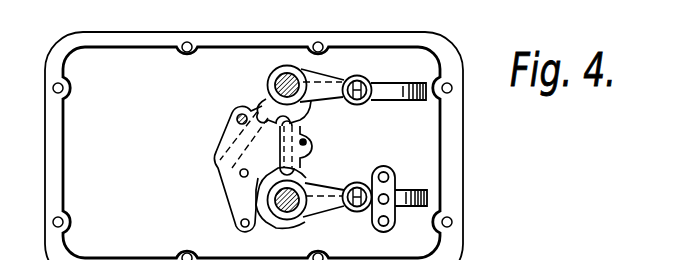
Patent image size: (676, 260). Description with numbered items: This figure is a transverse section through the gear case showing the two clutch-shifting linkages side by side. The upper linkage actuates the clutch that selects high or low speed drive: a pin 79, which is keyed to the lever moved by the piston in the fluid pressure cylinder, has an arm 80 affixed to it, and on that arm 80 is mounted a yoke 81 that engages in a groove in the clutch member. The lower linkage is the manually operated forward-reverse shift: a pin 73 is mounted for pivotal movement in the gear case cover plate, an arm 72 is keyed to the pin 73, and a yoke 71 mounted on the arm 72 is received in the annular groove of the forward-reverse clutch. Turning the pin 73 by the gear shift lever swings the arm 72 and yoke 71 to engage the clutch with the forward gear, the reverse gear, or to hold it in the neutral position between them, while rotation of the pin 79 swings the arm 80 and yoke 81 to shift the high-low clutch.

The pin 79 is at (277, 83).
The arm 80 is at (318, 80).
The yoke 81 is at (376, 87).
The pin 73 is at (283, 215).
The arm 72 is at (317, 184).
The yoke 71 is at (401, 185).